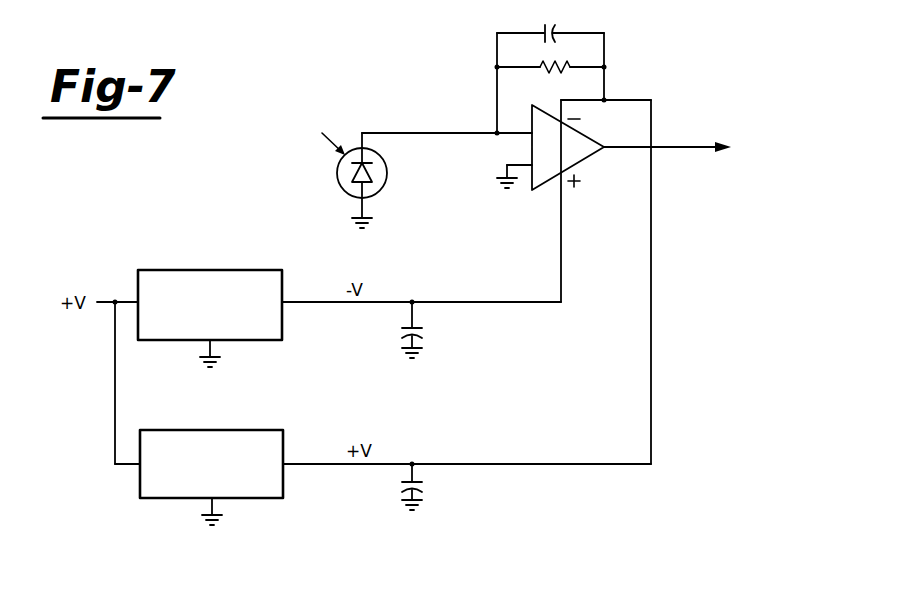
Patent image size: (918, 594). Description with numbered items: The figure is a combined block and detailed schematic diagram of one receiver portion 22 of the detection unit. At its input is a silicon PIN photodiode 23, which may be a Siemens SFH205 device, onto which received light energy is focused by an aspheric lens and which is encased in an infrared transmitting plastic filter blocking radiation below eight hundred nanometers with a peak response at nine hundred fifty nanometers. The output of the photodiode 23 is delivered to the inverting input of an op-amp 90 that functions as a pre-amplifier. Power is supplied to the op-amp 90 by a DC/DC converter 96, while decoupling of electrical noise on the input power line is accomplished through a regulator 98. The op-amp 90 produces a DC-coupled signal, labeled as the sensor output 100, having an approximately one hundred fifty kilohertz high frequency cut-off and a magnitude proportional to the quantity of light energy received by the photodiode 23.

The receiver portion 22 is at (415, 91).
The silicon PIN photodiode 23 is at (382, 186).
The op-amp 90 is at (585, 152).
The DC/DC converter 96 is at (270, 240).
The regulator 98 is at (272, 398).
The sensor output 100 is at (718, 108).